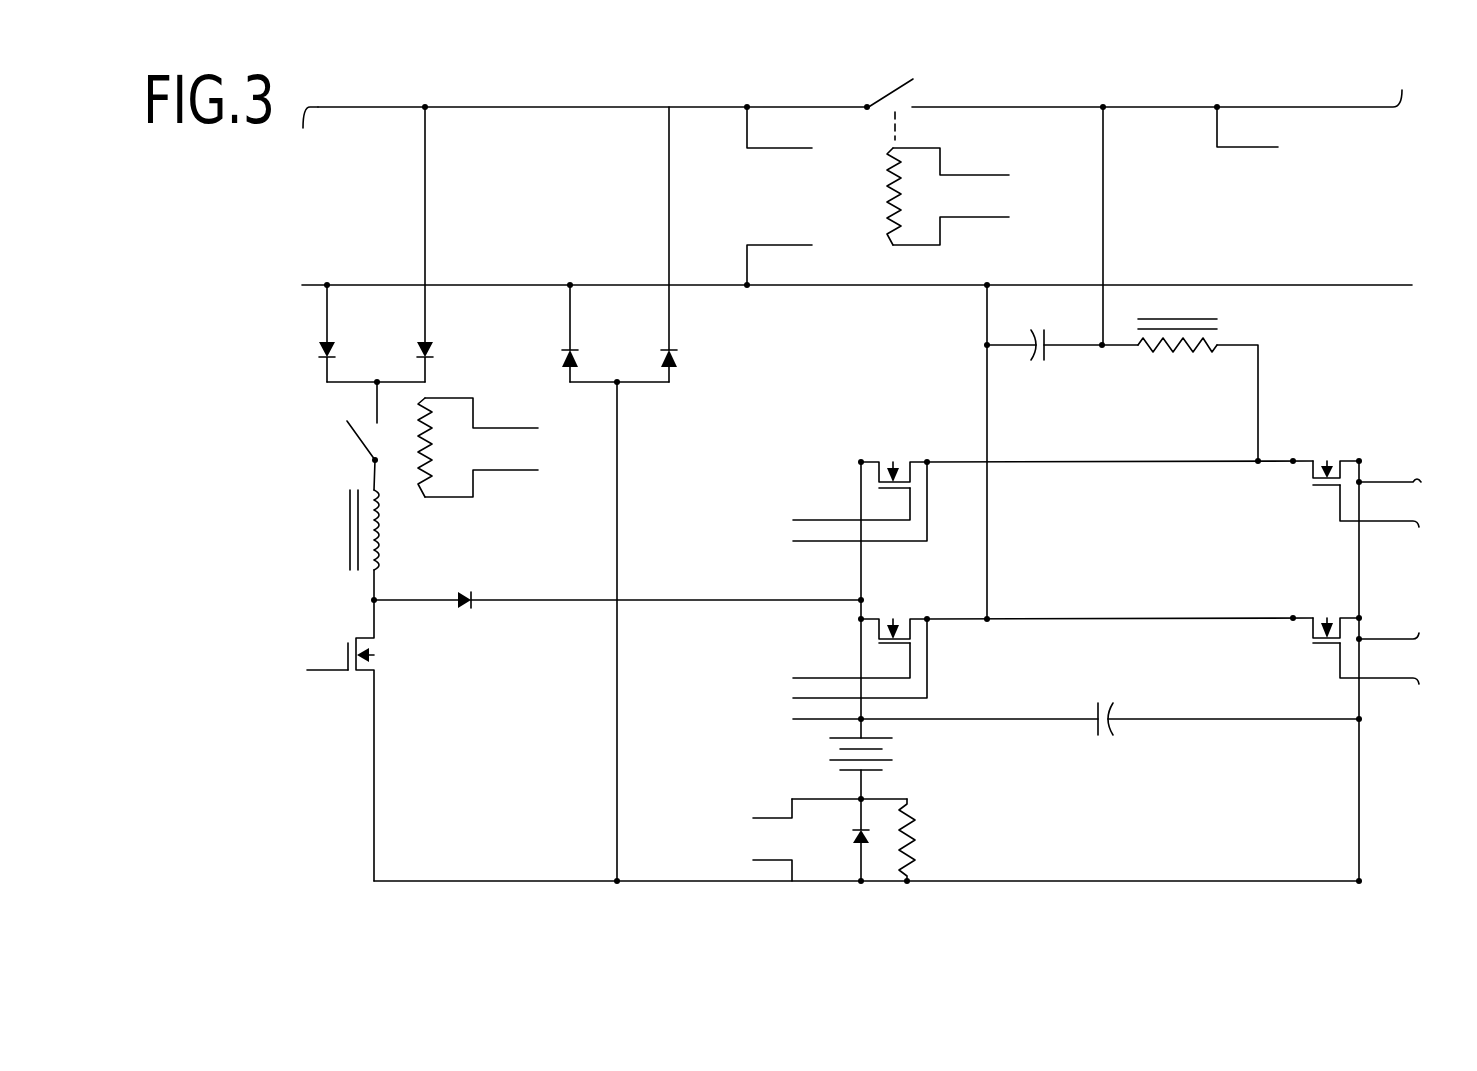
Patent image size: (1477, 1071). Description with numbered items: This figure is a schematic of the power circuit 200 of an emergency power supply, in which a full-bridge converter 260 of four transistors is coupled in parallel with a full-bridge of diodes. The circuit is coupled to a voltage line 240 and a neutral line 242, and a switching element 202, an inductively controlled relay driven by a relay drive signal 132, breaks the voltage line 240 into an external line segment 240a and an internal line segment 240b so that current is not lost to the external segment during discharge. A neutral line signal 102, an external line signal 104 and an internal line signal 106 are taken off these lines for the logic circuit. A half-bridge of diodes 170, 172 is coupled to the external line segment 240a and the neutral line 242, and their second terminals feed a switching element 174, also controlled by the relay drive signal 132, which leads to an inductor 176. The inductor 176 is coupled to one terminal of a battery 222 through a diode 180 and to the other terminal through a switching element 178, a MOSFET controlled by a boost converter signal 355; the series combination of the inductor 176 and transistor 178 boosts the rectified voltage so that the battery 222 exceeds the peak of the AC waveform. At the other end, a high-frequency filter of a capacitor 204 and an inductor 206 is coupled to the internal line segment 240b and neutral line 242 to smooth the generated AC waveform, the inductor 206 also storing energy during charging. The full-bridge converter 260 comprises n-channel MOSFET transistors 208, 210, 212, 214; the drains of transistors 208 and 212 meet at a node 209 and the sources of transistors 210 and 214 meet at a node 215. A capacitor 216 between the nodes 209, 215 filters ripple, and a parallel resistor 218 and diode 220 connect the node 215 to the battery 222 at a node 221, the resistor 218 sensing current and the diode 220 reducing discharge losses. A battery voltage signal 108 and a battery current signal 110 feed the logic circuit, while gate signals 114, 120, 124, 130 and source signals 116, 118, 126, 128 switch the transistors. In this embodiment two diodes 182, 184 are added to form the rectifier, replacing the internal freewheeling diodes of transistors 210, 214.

The neutral line signal 102 is at (800, 249).
The external line signal 104 is at (805, 135).
The internal line signal 106 is at (1274, 134).
The battery voltage signal 108 is at (919, 718).
The battery current signal 110 is at (763, 840).
The gate signal 114 is at (827, 511).
The source signal 116 is at (836, 510).
The source signal 118 is at (1414, 481).
The gate signal 120 is at (1400, 515).
The gate signal 124 is at (827, 667).
The source signal 126 is at (836, 665).
The source signal 128 is at (1409, 623).
The gate signal 130 is at (1394, 679).
The relay drive signal 132 is at (725, 322).
The diode 170 is at (427, 322).
The diode 172 is at (326, 336).
The switching element 174 is at (360, 445).
The inductor 176 is at (350, 530).
The switching element 178 is at (345, 650).
The diode 180 is at (479, 600).
The diode 182 is at (568, 374).
The diode 184 is at (672, 372).
The power circuit 200 is at (920, 882).
The switching element 202 is at (884, 98).
The capacitor 204 is at (1070, 347).
The inductor 206 is at (1183, 353).
The transistor 208 is at (895, 460).
The node 209 is at (861, 618).
The transistor 210 is at (1327, 460).
The transistor 212 is at (893, 618).
The transistor 214 is at (1322, 617).
The node 215 is at (1361, 619).
The capacitor 216 is at (1135, 721).
The resistor 218 is at (920, 838).
The diode 220 is at (834, 840).
The node 221 is at (863, 800).
The battery 222 is at (828, 759).
The voltage line 240 is at (1056, 107).
The external line segment 240a is at (364, 127).
The internal line segment 240b is at (1311, 84).
The neutral line 242 is at (826, 285).
The full-bridge converter 260 is at (1323, 431).
The boost converter signal 355 is at (296, 671).